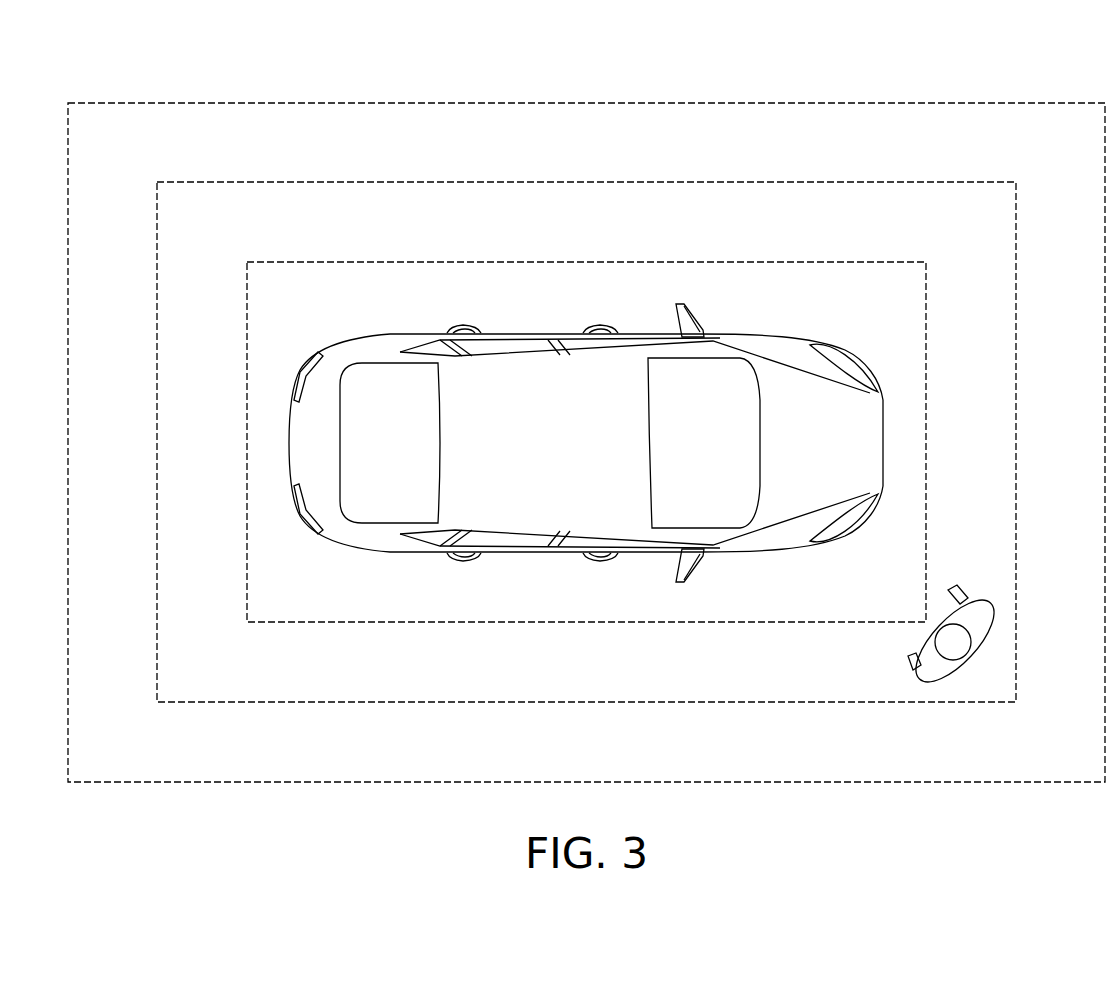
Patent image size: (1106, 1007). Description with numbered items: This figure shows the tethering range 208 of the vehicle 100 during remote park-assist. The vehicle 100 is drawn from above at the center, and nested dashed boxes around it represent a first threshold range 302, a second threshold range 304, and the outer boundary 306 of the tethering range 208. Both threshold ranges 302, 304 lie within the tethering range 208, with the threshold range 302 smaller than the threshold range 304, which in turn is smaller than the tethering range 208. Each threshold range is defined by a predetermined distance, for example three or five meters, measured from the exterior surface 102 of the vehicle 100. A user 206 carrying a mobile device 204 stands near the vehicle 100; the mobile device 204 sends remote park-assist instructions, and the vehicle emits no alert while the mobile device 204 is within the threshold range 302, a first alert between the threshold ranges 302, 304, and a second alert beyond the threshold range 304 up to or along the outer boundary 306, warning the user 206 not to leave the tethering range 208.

The vehicle 100 is at (882, 405).
The exterior surface 102 is at (768, 338).
The mobile device 204 is at (947, 590).
The user 206 is at (905, 665).
The tethering range 208 is at (996, 78).
The threshold range 302 is at (375, 262).
The threshold range 304 is at (448, 182).
The outer boundary 306 is at (530, 103).